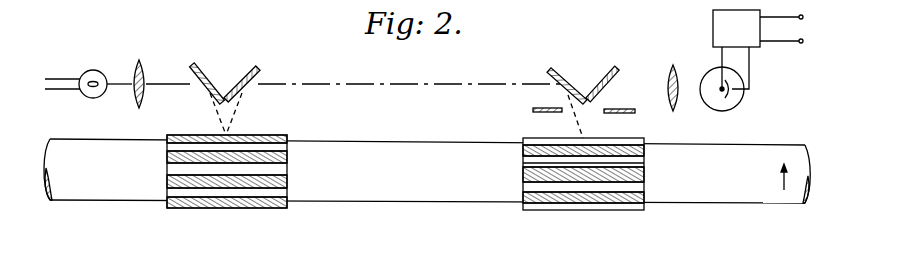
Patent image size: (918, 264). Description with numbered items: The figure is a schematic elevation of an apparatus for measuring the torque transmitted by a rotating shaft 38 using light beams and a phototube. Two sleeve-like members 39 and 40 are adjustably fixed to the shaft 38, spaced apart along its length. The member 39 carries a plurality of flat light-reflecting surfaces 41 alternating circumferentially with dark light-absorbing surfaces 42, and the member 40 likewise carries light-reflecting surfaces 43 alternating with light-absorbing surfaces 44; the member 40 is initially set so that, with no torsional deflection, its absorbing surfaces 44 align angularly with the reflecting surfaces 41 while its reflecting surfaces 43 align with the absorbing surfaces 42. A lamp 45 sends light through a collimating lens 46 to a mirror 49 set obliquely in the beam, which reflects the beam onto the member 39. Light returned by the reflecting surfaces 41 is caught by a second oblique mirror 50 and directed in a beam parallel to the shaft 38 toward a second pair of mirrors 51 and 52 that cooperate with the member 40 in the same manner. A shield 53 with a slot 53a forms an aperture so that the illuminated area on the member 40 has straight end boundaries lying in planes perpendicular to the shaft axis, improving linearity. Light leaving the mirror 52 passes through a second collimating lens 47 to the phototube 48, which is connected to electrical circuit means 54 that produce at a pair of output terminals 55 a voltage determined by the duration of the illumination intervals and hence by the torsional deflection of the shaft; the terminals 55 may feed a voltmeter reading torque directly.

The shaft 38 is at (412, 195).
The sleeve-like member 39 is at (266, 136).
The sleeve-like member 40 is at (578, 209).
The light-reflecting surfaces 41 is at (167, 152).
The light-absorbing surfaces 42 is at (287, 148).
The light-reflecting surfaces 43 is at (523, 152).
The light-absorbing surfaces 44 is at (635, 190).
The lamp 45 is at (93, 70).
The collimating lens 46 is at (141, 62).
The collimating lens 47 is at (668, 68).
The phototube 48 is at (742, 100).
The mirror 49 is at (200, 66).
The mirror 50 is at (250, 68).
The mirror 51 is at (563, 72).
The mirror 52 is at (603, 70).
The shield 53 is at (533, 110).
The slot 53a is at (604, 113).
The electrical circuit means 54 is at (713, 28).
The output terminals 55 is at (787, 29).